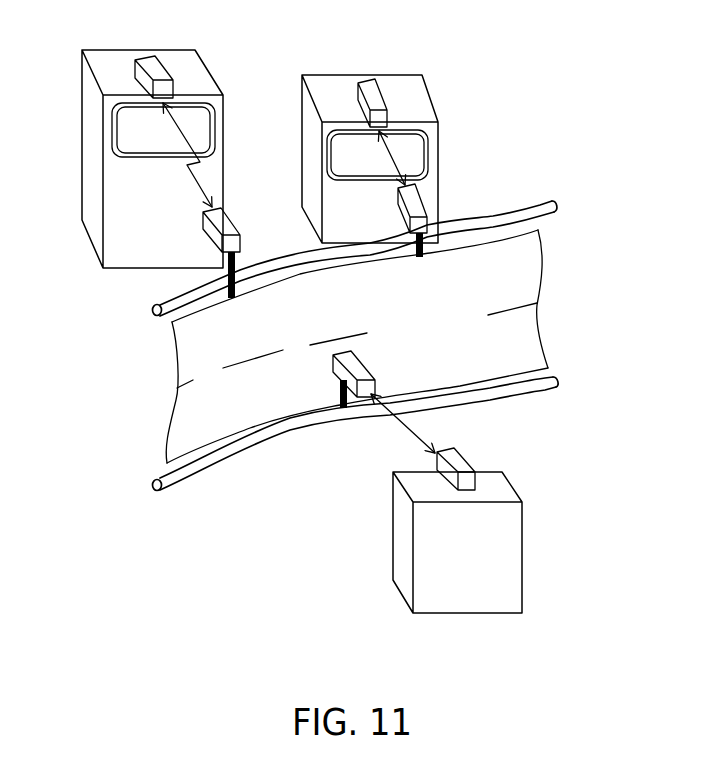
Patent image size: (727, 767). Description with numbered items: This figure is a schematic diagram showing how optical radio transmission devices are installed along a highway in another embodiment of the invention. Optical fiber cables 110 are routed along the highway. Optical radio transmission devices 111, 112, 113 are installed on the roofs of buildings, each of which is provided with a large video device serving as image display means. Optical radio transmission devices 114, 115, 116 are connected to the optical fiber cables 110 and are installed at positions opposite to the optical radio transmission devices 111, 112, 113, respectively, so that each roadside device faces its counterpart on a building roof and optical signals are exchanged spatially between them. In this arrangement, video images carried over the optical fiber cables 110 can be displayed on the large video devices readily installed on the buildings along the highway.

The optical fiber cable 110 is at (553, 203).
The optical radio transmission device 111 is at (160, 63).
The optical radio transmission device 112 is at (362, 104).
The optical radio transmission device 113 is at (463, 457).
The optical radio transmission device 114 is at (406, 210).
The optical radio transmission device 115 is at (226, 223).
The optical radio transmission device 116 is at (366, 371).